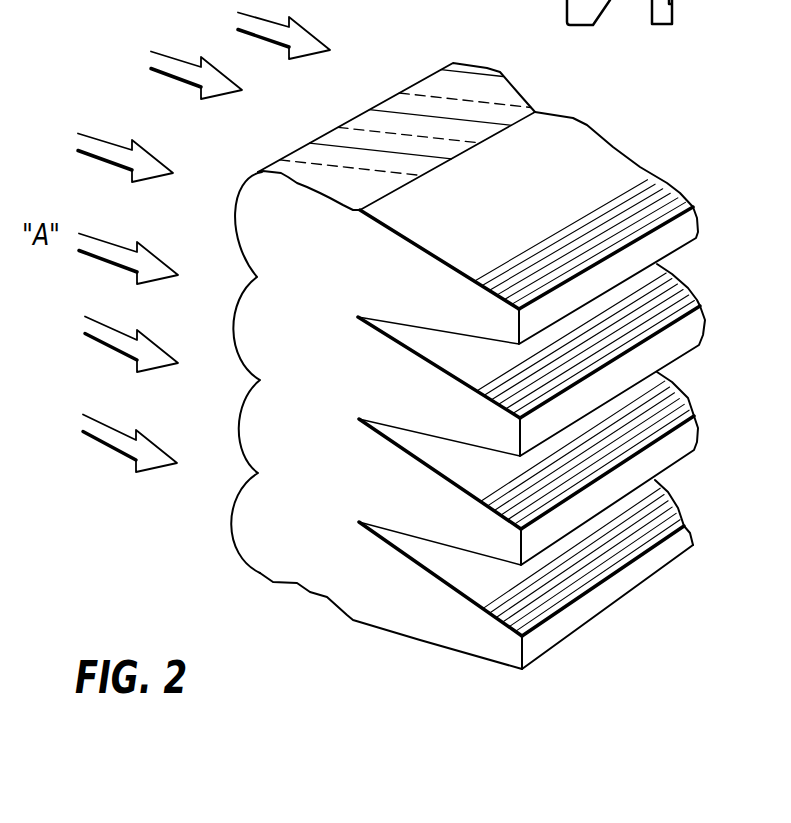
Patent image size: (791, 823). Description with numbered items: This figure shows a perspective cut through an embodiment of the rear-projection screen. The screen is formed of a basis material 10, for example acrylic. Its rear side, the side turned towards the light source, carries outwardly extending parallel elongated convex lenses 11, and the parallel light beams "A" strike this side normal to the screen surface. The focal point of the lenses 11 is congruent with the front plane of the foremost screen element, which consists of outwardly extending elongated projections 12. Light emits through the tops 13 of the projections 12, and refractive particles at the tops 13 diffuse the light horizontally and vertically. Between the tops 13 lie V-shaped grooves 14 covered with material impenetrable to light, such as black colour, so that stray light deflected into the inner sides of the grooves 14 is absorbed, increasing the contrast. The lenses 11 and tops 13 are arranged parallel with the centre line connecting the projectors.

The screen's basis material 10 is at (460, 383).
The convex lenses 11 is at (244, 540).
The projections 12 is at (575, 595).
The tops 13 is at (615, 587).
The grooves 14 is at (457, 568).